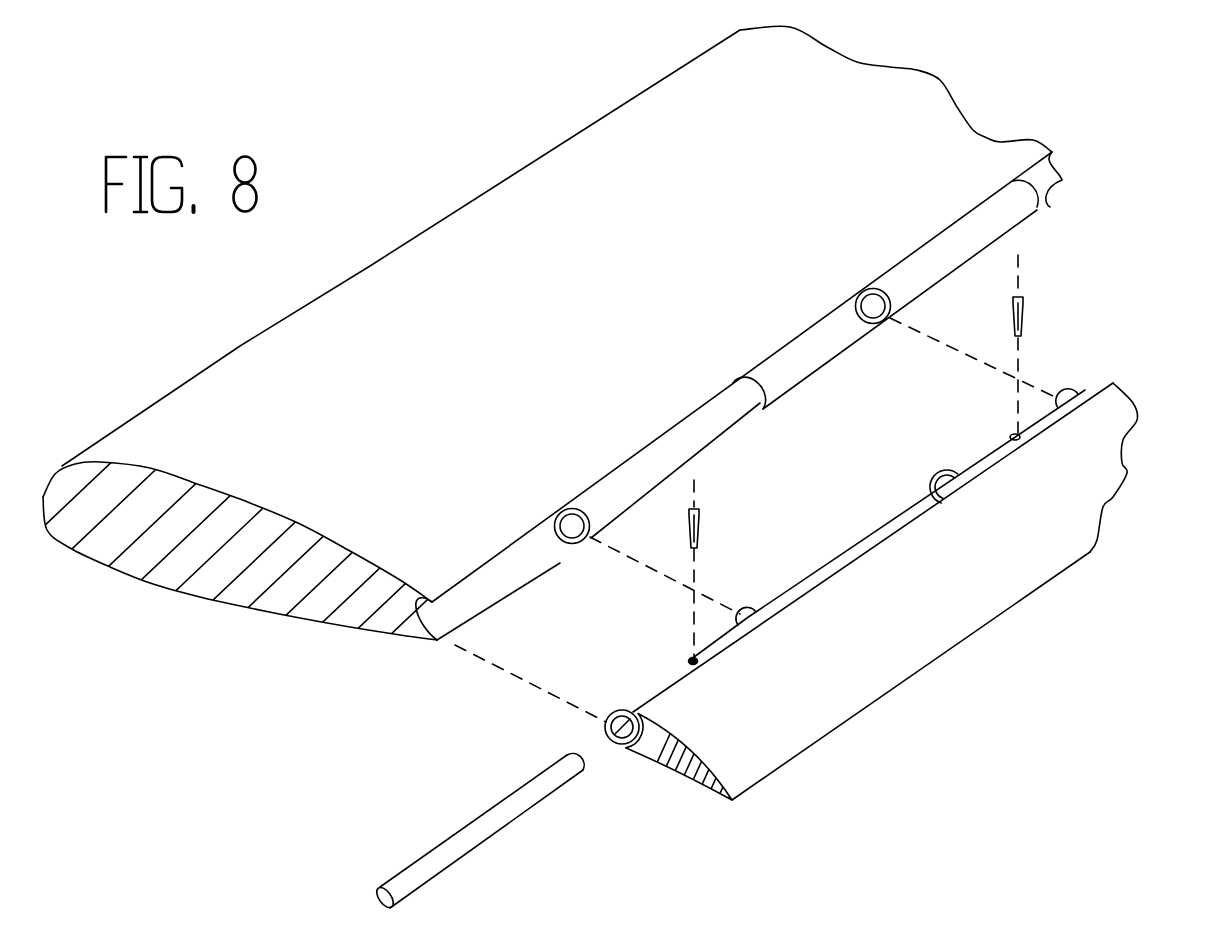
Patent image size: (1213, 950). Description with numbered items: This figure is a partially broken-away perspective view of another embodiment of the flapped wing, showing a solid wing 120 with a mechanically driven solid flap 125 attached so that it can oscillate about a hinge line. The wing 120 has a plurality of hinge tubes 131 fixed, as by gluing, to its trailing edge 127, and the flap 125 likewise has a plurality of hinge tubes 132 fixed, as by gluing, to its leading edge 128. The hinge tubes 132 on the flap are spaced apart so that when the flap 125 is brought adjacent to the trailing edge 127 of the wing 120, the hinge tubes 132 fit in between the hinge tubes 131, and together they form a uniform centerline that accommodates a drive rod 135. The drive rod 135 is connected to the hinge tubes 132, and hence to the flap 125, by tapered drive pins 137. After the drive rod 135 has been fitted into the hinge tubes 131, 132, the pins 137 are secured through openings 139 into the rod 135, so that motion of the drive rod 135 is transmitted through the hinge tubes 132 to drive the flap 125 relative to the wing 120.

The solid wing 120 is at (435, 376).
The flap 125 is at (925, 626).
The trailing edge 127 is at (453, 612).
The leading edge 128 is at (868, 527).
The hinge tubes 131 is at (1050, 207).
The hinge tubes 132 is at (1080, 392).
The drive rod 135 is at (503, 797).
The tapered drive pins 137 is at (1030, 305).
The openings 139 is at (1018, 440).